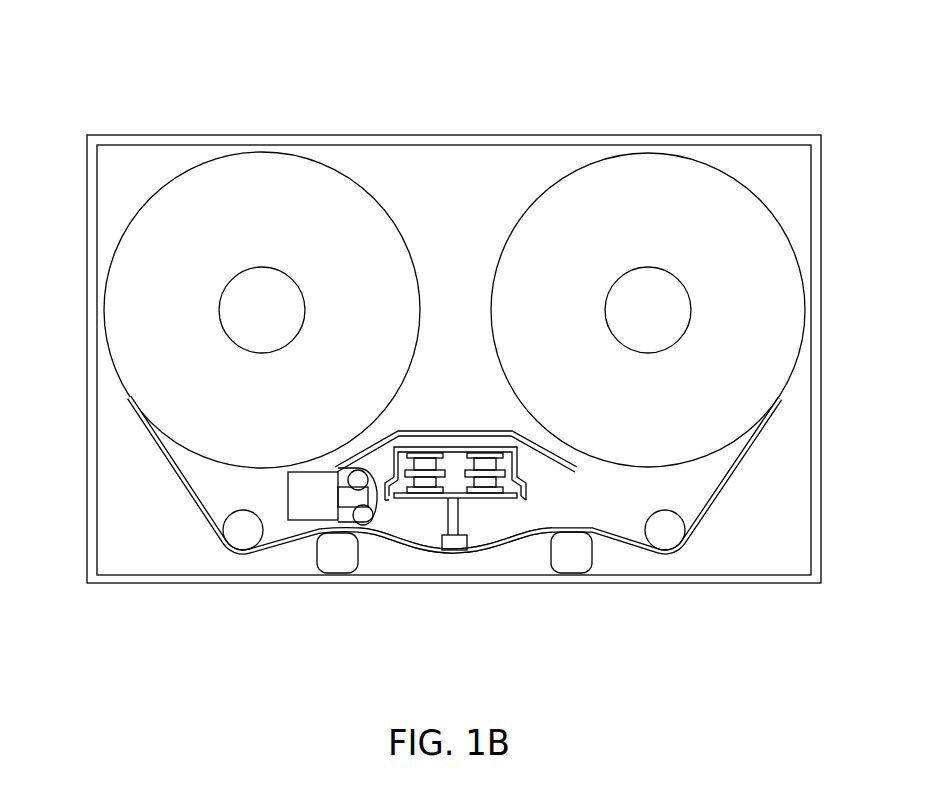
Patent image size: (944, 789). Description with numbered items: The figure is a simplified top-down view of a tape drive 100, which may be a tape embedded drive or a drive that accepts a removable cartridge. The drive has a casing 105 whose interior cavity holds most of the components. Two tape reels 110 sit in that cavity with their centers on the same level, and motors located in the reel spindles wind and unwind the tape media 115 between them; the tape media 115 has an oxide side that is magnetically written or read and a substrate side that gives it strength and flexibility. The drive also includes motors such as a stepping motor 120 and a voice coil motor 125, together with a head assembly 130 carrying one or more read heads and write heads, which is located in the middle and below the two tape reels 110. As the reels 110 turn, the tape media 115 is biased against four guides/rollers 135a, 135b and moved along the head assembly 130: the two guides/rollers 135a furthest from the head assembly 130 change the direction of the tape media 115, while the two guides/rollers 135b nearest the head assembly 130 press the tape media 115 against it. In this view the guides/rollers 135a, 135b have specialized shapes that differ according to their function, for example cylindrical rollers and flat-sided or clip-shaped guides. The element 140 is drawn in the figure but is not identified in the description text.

The tape drive 100 is at (83, 62).
The casing 105 is at (487, 135).
The tape reels 110 is at (245, 155).
The tape media 115 is at (188, 492).
The stepping motor 120 is at (297, 520).
The voice coil motor 125 is at (430, 503).
The head assembly 130 is at (453, 553).
The guides/rollers 135a is at (242, 532).
The guides/rollers 135b is at (338, 560).
The magnetic tape 140 is at (473, 543).